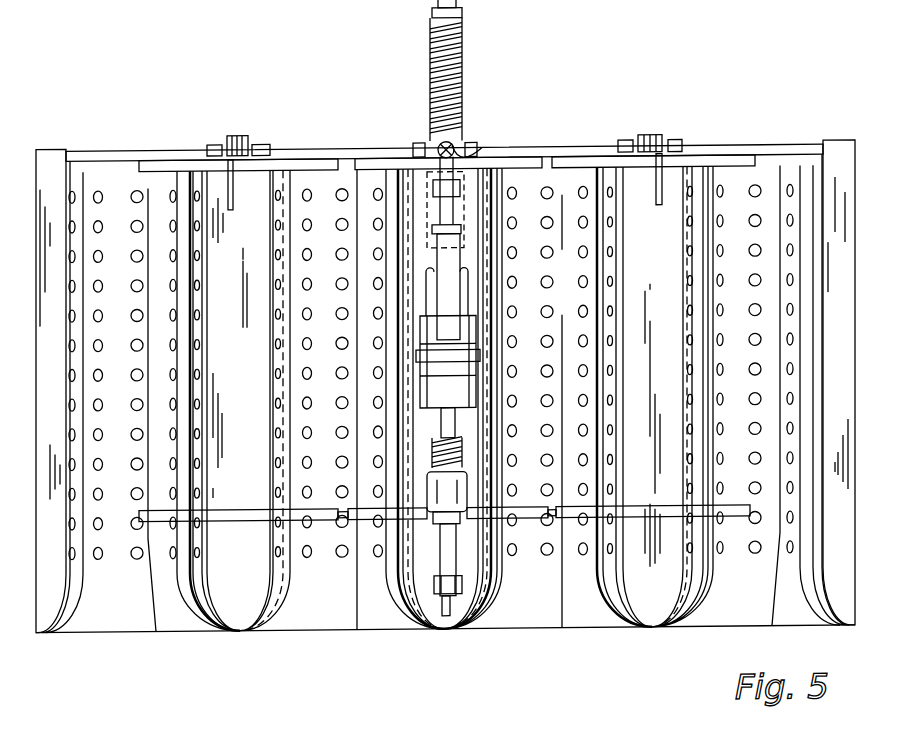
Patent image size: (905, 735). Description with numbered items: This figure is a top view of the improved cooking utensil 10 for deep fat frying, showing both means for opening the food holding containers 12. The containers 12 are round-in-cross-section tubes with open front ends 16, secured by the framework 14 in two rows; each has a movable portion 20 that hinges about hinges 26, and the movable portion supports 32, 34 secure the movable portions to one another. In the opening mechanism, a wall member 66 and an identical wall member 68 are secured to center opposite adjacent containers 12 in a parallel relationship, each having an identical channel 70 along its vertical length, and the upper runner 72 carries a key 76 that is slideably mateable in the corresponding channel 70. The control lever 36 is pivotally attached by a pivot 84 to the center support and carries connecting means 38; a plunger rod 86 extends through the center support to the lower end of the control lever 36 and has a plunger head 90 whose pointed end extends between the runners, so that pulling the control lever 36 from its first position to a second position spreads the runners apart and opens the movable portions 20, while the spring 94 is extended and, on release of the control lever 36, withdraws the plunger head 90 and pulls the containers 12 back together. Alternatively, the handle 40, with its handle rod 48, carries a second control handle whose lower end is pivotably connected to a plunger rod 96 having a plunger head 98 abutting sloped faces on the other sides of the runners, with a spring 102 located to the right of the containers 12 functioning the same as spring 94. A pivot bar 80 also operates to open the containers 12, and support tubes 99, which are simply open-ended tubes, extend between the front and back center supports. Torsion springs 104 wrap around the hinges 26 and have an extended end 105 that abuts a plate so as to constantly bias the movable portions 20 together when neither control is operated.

The cooking utensil 10 is at (800, 138).
The food holding containers 12 is at (124, 621).
The framework 14 is at (237, 610).
The open front ends 16 is at (324, 643).
The movable portions 20 is at (333, 620).
The hinges 26 is at (52, 152).
The movable portion support 32 is at (240, 522).
The movable portion support 34 is at (362, 168).
The control lever 36 is at (418, 633).
The connecting means 38 is at (444, 618).
The handle 40 is at (455, 198).
The handle rod 48 is at (480, 162).
The wall member 66 is at (417, 403).
The wall member 68 is at (473, 416).
The channel 70 is at (410, 383).
The upper runner 72 is at (487, 366).
The key 76 is at (430, 360).
The pivot bar 80 is at (470, 334).
The pivot 84 is at (458, 530).
The plunger rod 86 is at (482, 513).
The plunger head 90 is at (412, 442).
The spring 94 is at (410, 469).
The plunger rod 96 is at (460, 57).
The plunger head 98 is at (564, 162).
The support tubes 99 is at (218, 362).
The spring 102 is at (460, 32).
The torsion springs 104 is at (237, 136).
The extended end 105 is at (233, 192).